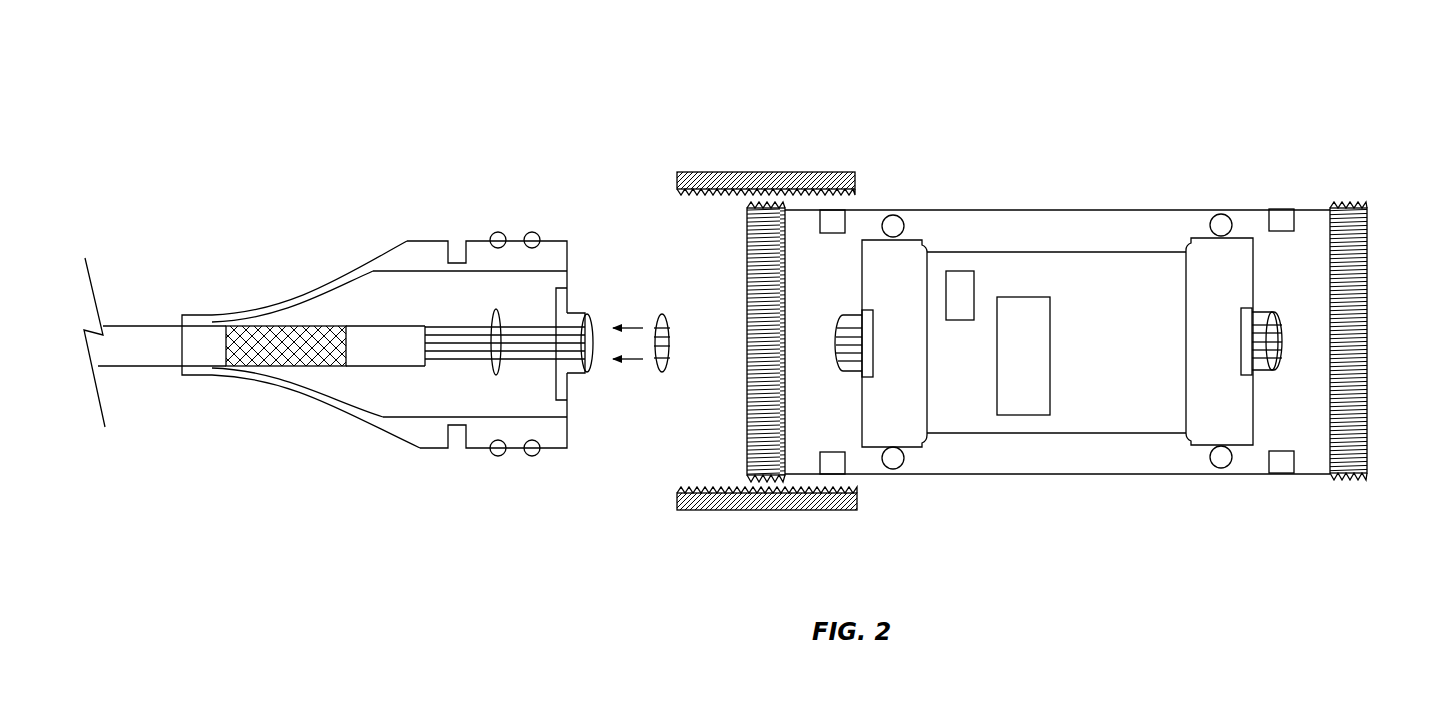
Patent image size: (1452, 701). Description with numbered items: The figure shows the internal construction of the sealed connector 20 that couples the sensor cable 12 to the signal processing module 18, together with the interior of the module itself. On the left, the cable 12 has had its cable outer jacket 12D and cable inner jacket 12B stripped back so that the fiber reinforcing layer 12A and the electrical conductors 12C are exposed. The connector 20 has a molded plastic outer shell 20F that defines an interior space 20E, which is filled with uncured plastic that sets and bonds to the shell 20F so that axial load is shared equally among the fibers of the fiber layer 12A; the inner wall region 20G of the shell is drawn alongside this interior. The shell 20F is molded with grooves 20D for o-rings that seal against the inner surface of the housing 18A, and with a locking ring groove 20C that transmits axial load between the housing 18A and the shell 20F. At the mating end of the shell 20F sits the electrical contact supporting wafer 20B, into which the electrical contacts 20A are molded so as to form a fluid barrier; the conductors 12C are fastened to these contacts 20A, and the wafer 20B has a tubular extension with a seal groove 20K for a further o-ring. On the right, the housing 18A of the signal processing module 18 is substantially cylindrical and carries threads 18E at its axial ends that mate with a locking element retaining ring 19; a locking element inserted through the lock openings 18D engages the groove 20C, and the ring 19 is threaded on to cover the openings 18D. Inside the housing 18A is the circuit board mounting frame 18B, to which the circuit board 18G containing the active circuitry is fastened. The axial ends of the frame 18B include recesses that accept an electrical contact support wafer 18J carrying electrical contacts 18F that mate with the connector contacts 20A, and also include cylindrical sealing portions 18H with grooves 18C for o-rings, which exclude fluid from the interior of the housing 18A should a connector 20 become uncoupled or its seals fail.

The sensor cable 12 is at (122, 325).
The fiber reinforcing layer 12A is at (294, 368).
The cable inner jacket 12B is at (405, 368).
The electrical conductors 12C is at (495, 318).
The cable outer jacket 12D is at (210, 376).
The sealed connector 20 is at (347, 415).
The electrical contacts 20A is at (662, 372).
The electrical contact supporting wafer 20B is at (567, 293).
The locking ring groove 20C is at (457, 252).
The grooves 20D is at (530, 456).
The interior space 20E is at (372, 266).
The outer shell 20F is at (380, 438).
The boot inner wall 20G is at (238, 308).
The seal groove 20K is at (578, 375).
The signal processing module 18 is at (1128, 62).
The housing 18A is at (1190, 476).
The circuit board mounting frame 18B is at (1000, 250).
The grooves 18C is at (1219, 210).
The lock openings 18D is at (1282, 475).
The threads 18E is at (1348, 481).
The electrical contacts 18F is at (826, 318).
The circuit board 18G is at (958, 474).
The sealing portions 18H is at (1219, 341).
The electrical contact support wafer 18J is at (1238, 343).
The locking element retaining ring 19 is at (728, 511).